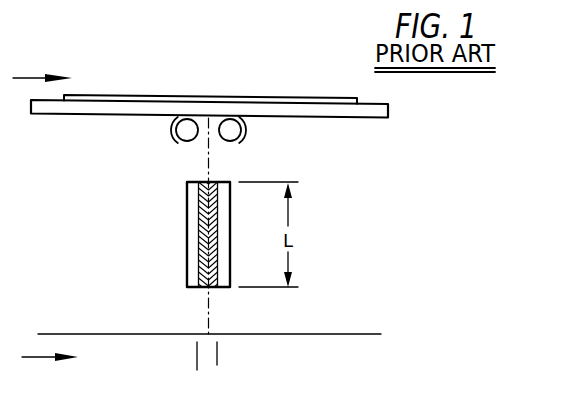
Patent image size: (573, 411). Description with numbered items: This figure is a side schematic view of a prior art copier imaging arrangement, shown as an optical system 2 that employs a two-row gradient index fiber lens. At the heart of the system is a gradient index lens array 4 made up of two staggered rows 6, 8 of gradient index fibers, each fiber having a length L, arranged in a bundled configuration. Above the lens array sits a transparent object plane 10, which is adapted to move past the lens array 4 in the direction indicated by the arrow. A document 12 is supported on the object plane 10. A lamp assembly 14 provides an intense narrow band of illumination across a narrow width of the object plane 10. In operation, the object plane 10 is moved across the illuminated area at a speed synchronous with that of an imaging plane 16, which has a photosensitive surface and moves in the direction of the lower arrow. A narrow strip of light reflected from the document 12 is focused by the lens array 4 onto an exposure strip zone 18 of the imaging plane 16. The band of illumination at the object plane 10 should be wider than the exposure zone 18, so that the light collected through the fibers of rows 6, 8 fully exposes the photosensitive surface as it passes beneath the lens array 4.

The optical system 2 is at (168, 234).
The gradient index lens array 4 is at (230, 210).
The first row of gradient index fibers 6 is at (198, 255).
The second row of gradient index fibers 8 is at (230, 265).
The transparent object plane 10 is at (347, 118).
The document 12 is at (237, 95).
The lamp assembly 14 is at (166, 157).
The imaging plane 16 is at (320, 334).
The exposure strip zone 18 is at (205, 358).